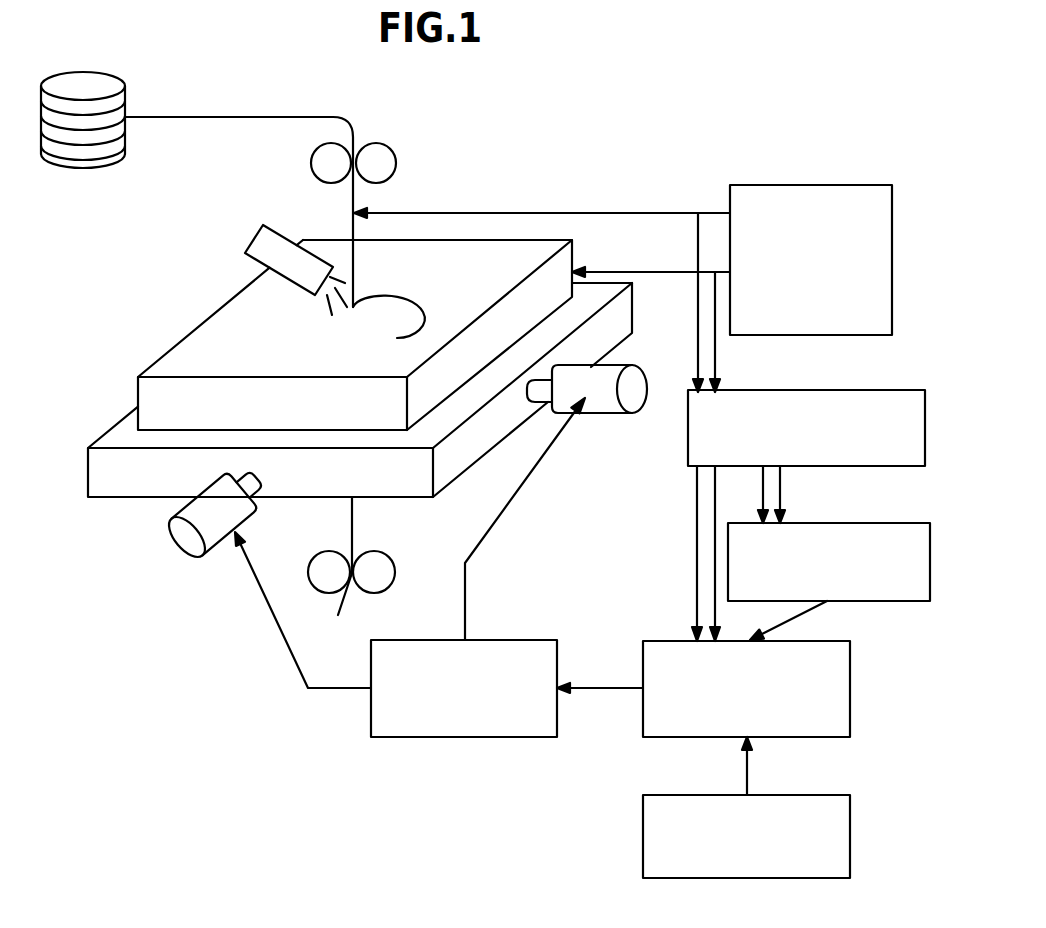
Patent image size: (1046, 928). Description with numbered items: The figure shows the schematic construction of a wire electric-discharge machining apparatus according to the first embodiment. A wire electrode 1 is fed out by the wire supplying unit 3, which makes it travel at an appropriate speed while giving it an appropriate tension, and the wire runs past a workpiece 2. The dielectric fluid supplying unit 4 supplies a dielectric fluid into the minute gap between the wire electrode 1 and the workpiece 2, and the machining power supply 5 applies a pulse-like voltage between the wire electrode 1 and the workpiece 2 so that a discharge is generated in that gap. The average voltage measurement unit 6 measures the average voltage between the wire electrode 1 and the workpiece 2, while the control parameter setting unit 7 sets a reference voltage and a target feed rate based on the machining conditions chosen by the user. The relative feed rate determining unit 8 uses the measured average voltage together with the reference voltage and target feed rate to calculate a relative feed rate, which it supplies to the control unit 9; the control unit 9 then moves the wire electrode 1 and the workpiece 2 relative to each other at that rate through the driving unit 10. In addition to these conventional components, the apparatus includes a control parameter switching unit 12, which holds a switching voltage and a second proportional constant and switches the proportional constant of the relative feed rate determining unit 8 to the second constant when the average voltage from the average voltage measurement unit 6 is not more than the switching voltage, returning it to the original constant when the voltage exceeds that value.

The wire electrode 1 is at (227, 113).
The workpiece 2 is at (191, 330).
The wire supplying unit 3 is at (388, 155).
The dielectric fluid supplying unit 4 is at (257, 230).
The machining power supply 5 is at (862, 185).
The average voltage measurement unit 6 is at (870, 388).
The control parameter setting unit 7 is at (818, 796).
The relative feed rate determining unit 8 is at (850, 662).
The control unit 9 is at (523, 737).
The driving unit 10 is at (620, 363).
The control parameter switching unit 12 is at (870, 520).